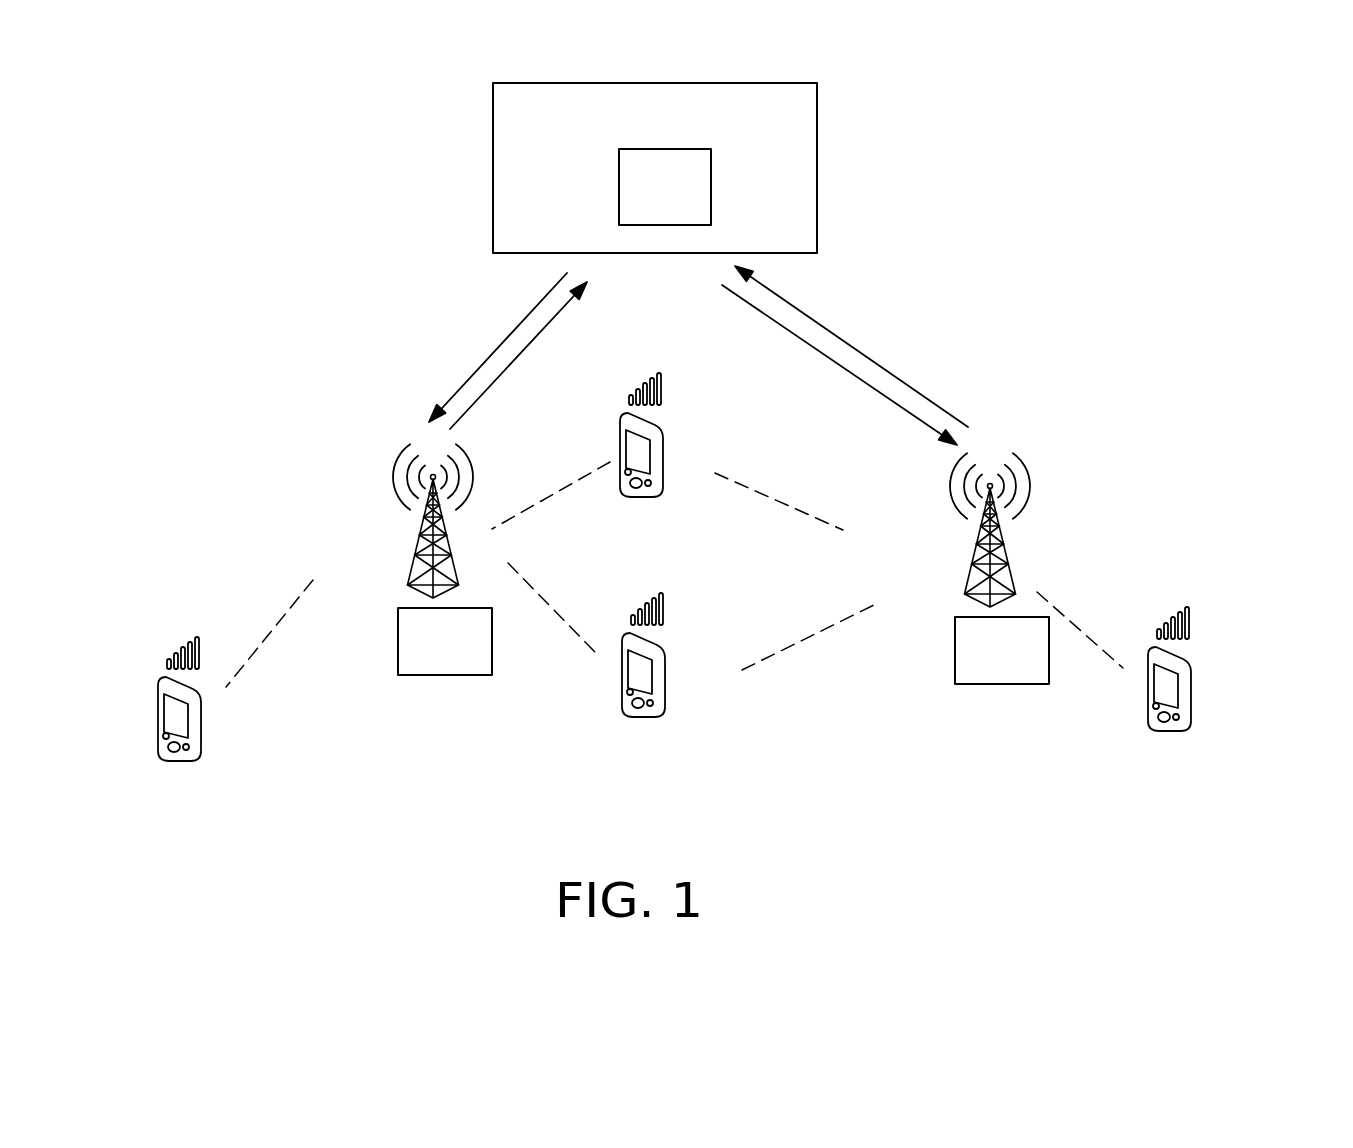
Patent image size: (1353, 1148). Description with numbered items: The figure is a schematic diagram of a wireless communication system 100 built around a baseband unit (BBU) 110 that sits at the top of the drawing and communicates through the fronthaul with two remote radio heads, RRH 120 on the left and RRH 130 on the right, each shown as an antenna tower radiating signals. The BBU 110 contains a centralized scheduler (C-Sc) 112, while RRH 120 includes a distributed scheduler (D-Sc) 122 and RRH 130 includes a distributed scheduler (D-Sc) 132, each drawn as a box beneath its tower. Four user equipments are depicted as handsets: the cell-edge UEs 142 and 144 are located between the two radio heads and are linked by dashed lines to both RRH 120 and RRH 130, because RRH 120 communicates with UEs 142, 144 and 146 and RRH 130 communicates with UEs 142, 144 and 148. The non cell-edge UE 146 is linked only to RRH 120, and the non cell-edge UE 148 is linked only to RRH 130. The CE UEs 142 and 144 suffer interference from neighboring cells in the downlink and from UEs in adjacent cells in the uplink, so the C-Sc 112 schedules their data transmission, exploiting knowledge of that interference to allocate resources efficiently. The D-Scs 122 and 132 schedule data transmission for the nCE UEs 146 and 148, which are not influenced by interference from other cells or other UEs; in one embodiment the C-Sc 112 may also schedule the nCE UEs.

The wireless communication system 100 is at (396, 120).
The baseband unit (BBU) 110 is at (818, 152).
The centralized scheduler (C-Sc) 112 is at (618, 185).
The remote radio head (RRH) 120 is at (378, 448).
The distributed scheduler (D-Sc) 122 is at (445, 676).
The remote radio head (RRH) 130 is at (917, 600).
The distributed scheduler (D-Sc) 132 is at (1002, 682).
The cell-edge user equipment (CE UE) 142 is at (655, 655).
The cell-edge user equipment (CE UE) 144 is at (652, 433).
The non cell-edge user equipment (nCE UE) 146 is at (192, 735).
The non cell-edge user equipment (nCE UE) 148 is at (1187, 675).